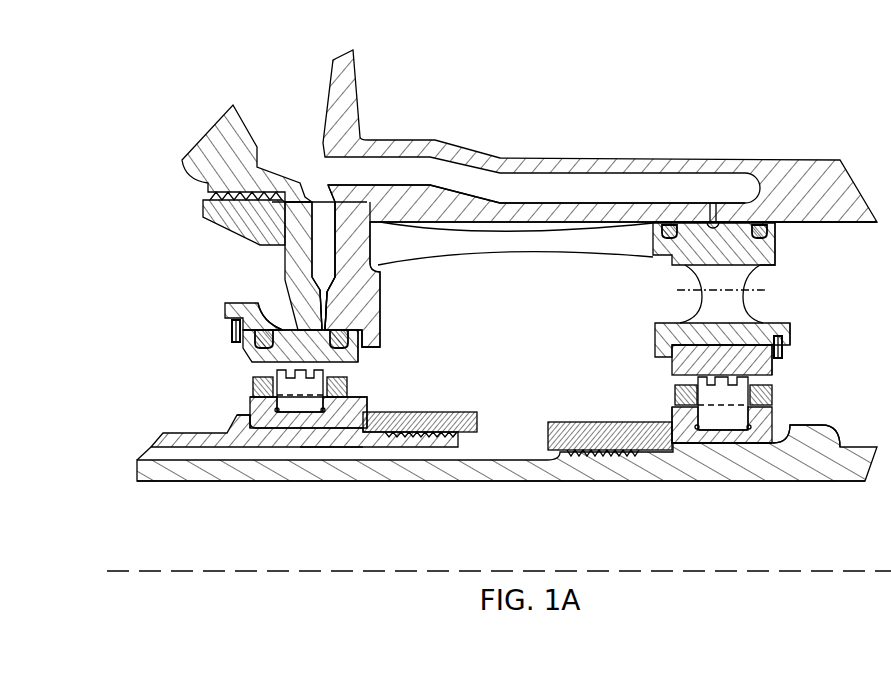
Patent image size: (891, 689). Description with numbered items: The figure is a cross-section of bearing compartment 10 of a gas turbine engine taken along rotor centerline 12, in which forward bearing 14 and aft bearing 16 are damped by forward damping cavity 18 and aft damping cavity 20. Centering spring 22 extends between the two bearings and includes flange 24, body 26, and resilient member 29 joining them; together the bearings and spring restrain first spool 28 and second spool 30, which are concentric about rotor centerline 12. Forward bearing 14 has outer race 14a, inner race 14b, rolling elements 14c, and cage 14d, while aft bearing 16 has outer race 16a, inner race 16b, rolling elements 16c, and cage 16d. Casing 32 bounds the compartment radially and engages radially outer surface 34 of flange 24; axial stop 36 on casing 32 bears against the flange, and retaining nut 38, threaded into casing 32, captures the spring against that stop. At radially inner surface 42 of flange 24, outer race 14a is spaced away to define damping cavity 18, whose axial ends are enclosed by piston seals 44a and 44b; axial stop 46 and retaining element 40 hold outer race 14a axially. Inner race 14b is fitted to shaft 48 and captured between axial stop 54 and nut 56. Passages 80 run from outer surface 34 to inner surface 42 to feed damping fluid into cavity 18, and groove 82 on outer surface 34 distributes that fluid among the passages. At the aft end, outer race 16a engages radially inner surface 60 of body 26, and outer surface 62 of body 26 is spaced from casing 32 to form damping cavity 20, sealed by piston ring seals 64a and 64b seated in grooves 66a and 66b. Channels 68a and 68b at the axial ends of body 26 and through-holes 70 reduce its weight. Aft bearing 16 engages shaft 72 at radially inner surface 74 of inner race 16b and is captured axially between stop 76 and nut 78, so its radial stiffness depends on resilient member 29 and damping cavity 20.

The bearing compartment 10 is at (713, 73).
The rotor centerline 12 is at (688, 573).
The forward bearing 14 is at (179, 388).
The outer race 14a is at (358, 356).
The inner race 14b is at (366, 406).
The rolling elements 14c is at (301, 421).
The cage 14d is at (347, 386).
The aft bearing 16 is at (821, 388).
The outer race 16a is at (672, 365).
The inner race 16b is at (672, 414).
The rolling elements 16c is at (723, 420).
The cage 16d is at (676, 394).
The forward damping cavity 18 is at (282, 316).
The aft damping cavity 20 is at (693, 210).
The centering spring 22 is at (540, 219).
The flange 24 is at (285, 257).
The body 26 is at (806, 285).
The first spool 28 is at (145, 439).
The resilient member 29 is at (562, 253).
The second spool 30 is at (751, 498).
The casing 32 is at (212, 131).
The radially outer surface 34 is at (352, 200).
The axial stop 36 is at (413, 187).
The retaining nut 38 is at (203, 209).
The retaining element 40 is at (232, 338).
The radially inner surface 42 is at (263, 362).
The piston seal 44a is at (232, 308).
The piston seal 44b is at (346, 328).
The axial stop 46 is at (382, 345).
The shaft 48 is at (333, 448).
The axial stop 54 is at (251, 417).
The nut 56 is at (463, 412).
The radially inner surface 60 is at (774, 348).
The outer surface 62 is at (737, 222).
The piston ring seal 64a is at (670, 222).
The piston ring seal 64b is at (760, 222).
The groove 66a is at (672, 256).
The groove 66b is at (768, 244).
The channel 68a is at (680, 316).
The channel 68b is at (752, 311).
The through-holes 70 is at (716, 299).
The shaft 72 is at (595, 482).
The radially inner surface 74 is at (683, 444).
The stop 76 is at (775, 433).
The nut 78 is at (556, 421).
The passages 80 is at (330, 299).
The groove 82 is at (314, 243).